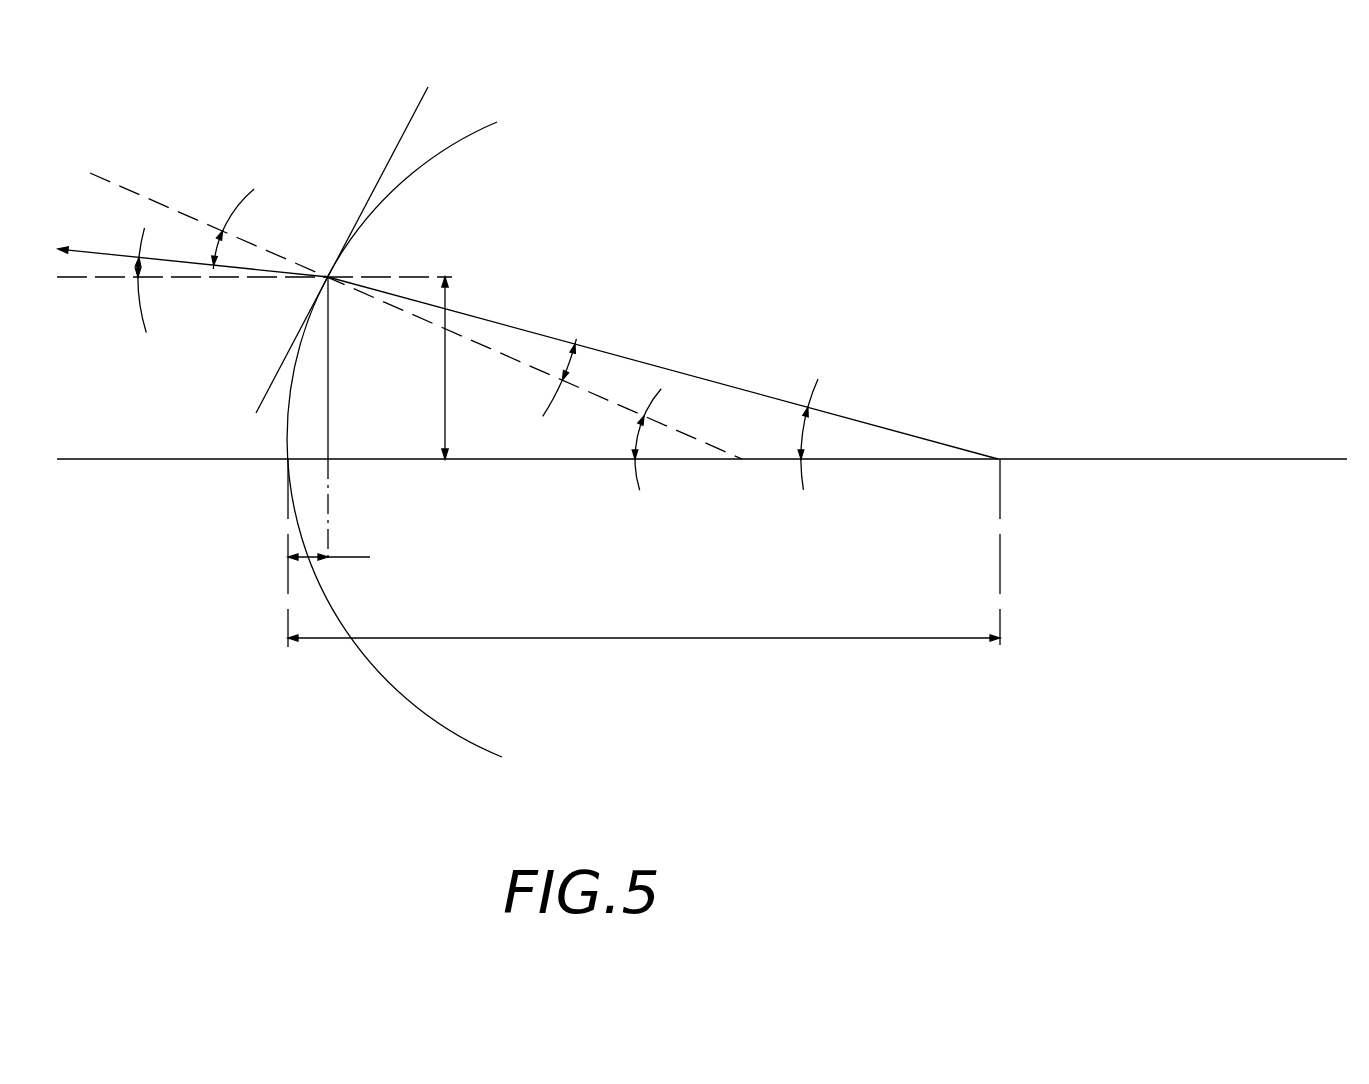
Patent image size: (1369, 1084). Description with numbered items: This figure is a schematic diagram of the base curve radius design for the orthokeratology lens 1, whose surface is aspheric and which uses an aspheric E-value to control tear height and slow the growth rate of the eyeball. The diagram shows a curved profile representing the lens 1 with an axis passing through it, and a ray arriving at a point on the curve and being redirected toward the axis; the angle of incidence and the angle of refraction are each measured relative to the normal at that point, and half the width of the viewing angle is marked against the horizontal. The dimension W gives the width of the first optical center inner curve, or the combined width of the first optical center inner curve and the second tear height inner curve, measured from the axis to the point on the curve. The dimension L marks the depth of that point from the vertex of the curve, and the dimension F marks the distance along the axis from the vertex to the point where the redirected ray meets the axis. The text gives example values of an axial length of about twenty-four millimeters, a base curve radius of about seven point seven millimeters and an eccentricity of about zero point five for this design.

The lens 1 is at (372, 689).
The width of the first optical center inner curve W is at (430, 368).
The depth of reflection point from mirror vertex L is at (329, 540).
The focal length F is at (644, 620).